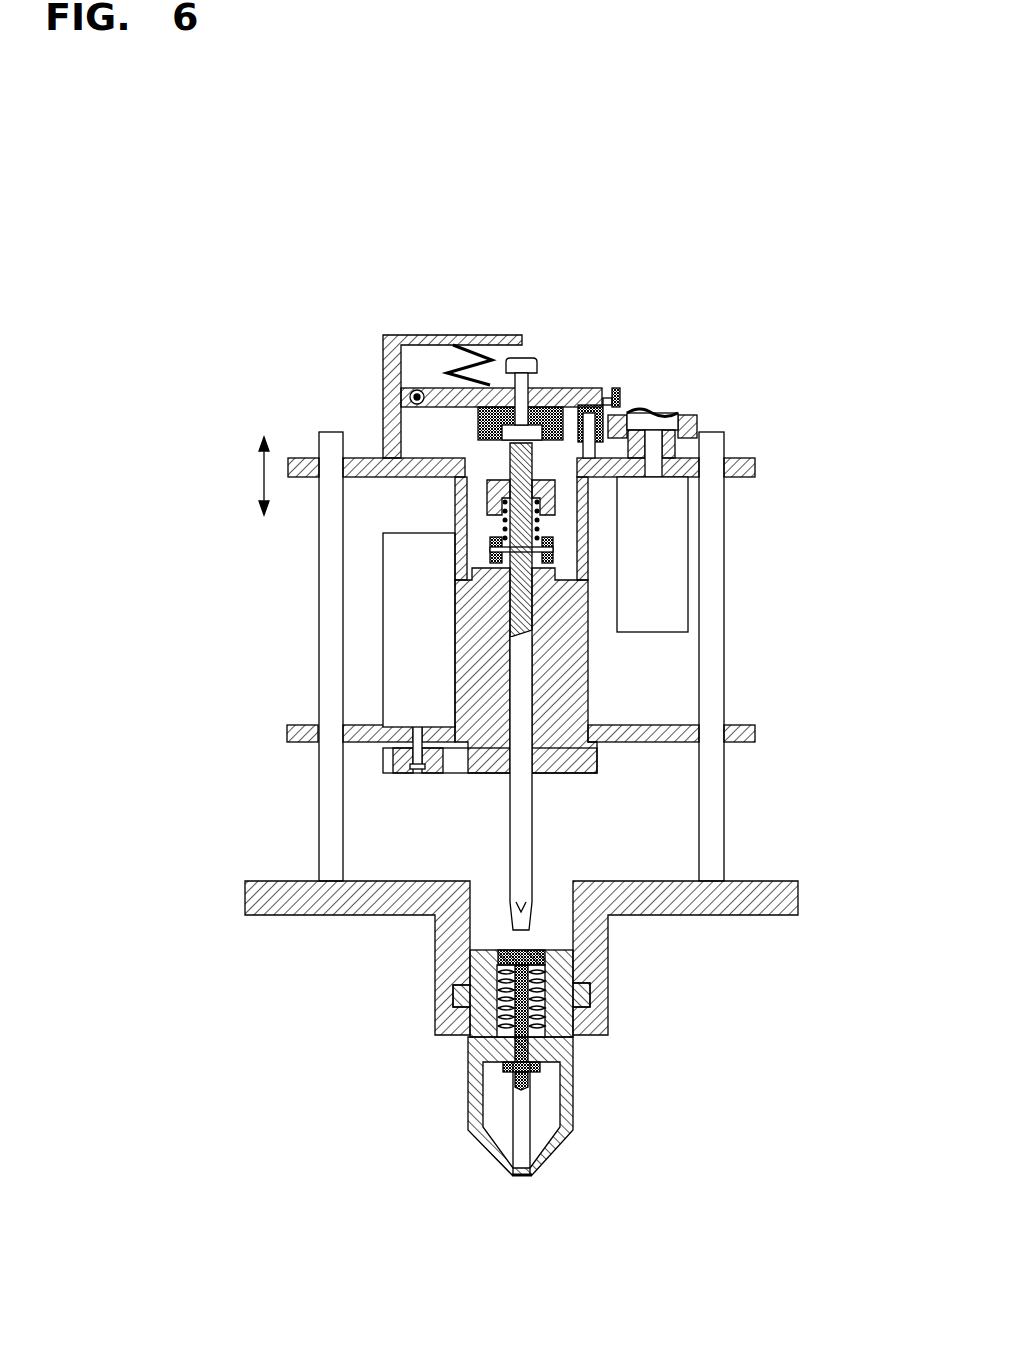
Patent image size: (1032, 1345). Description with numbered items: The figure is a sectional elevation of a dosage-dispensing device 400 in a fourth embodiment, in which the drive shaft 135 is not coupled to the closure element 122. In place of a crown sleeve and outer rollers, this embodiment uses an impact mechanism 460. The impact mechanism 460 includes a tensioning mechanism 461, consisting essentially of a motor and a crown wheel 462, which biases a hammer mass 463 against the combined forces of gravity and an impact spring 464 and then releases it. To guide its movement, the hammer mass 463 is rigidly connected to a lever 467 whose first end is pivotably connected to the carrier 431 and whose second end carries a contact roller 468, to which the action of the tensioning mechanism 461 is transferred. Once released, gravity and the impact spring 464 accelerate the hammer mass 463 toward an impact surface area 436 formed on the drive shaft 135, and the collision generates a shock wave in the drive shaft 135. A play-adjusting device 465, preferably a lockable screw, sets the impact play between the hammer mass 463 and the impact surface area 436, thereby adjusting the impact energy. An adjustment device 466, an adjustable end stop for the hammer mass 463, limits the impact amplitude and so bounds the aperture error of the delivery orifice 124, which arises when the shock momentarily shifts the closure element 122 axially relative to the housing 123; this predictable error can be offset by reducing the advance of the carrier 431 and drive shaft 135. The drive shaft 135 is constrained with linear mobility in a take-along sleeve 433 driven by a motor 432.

The dosage-dispensing device 400 is at (335, 309).
The lever 467 is at (430, 392).
The impact spring 464 is at (480, 357).
The play-adjusting device 465 is at (518, 390).
The impact mechanism 460 is at (527, 300).
The impact surface area 436 is at (537, 410).
The hammer mass 463 is at (552, 412).
The adjustment device 466 is at (603, 392).
The contact roller 468 is at (618, 390).
The crown wheel 462 is at (697, 420).
The tensioning mechanism 461 is at (643, 563).
The motor 432 is at (415, 622).
The carrier 431 is at (365, 733).
The take-along sleeve 433 is at (545, 690).
The drive shaft 135 is at (522, 848).
The housing 123 is at (552, 1048).
The closure element 122 is at (523, 1097).
The delivery orifice 124 is at (506, 1194).